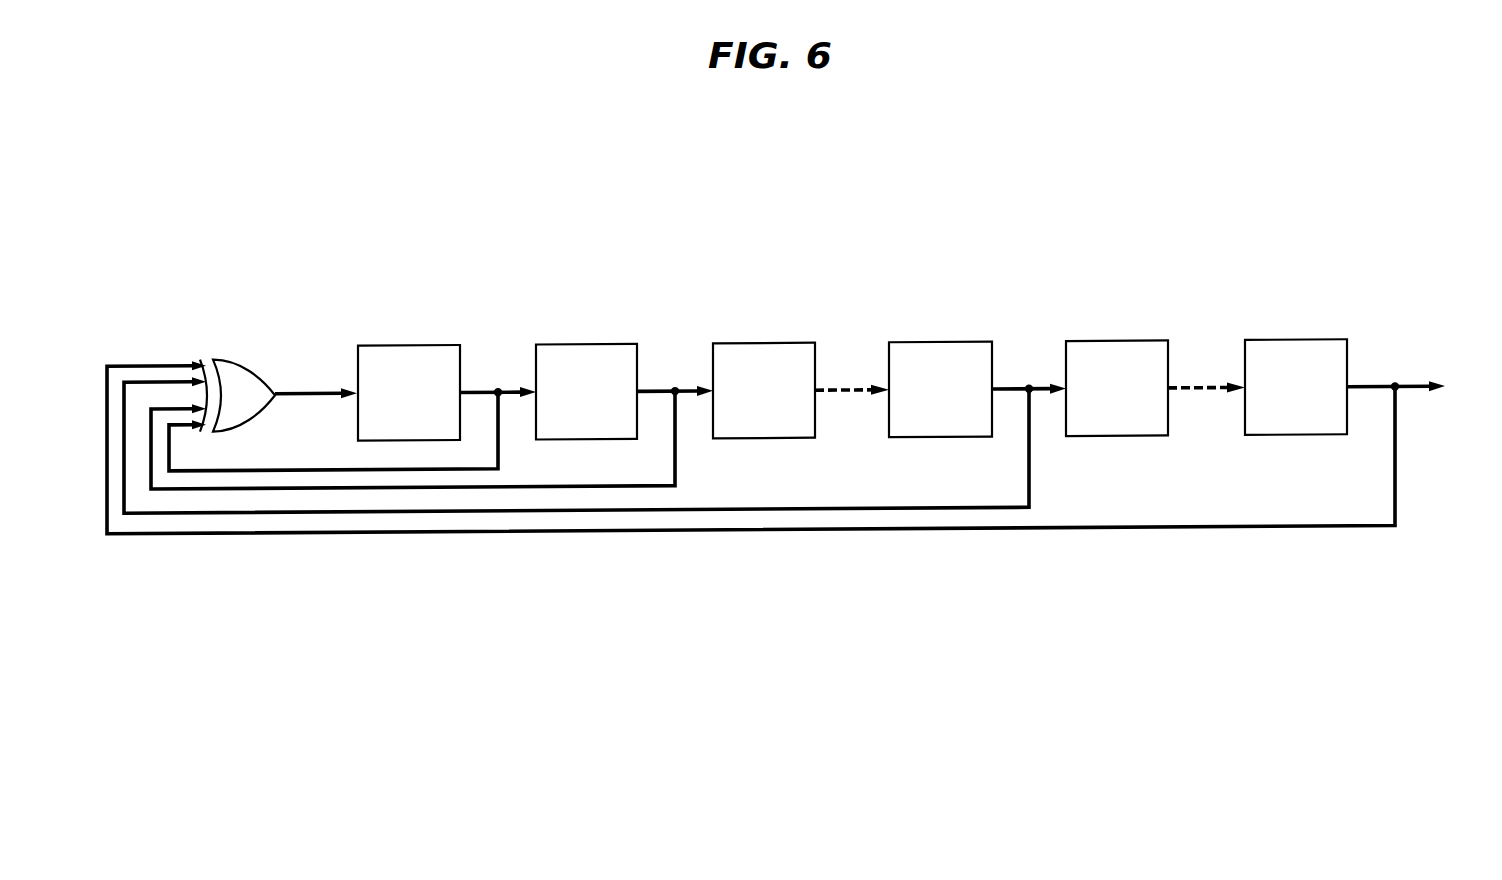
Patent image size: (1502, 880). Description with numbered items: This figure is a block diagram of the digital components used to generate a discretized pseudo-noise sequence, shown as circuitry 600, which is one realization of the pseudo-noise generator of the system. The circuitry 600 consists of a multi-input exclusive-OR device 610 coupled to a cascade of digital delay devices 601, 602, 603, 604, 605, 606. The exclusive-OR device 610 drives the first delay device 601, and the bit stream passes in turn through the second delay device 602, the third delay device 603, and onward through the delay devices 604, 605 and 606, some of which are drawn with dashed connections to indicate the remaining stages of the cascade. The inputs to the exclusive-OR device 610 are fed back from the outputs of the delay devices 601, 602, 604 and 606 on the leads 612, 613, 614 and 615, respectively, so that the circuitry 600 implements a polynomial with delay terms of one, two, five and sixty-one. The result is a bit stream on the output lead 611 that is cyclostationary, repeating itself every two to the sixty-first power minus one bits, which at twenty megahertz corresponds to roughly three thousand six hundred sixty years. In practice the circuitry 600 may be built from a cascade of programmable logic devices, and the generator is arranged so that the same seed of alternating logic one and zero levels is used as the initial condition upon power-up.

The circuitry 600 is at (787, 142).
The digital delay device 601 is at (405, 348).
The digital delay device 602 is at (583, 348).
The digital delay device 603 is at (758, 348).
The digital delay device 604 is at (938, 348).
The digital delay device 605 is at (1115, 348).
The digital delay device 606 is at (1293, 348).
The multi-input exclusive-OR device 610 is at (256, 371).
The lead 611 is at (307, 400).
The lead 612 is at (500, 464).
The lead 613 is at (677, 466).
The lead 614 is at (1031, 481).
The lead 615 is at (1397, 468).